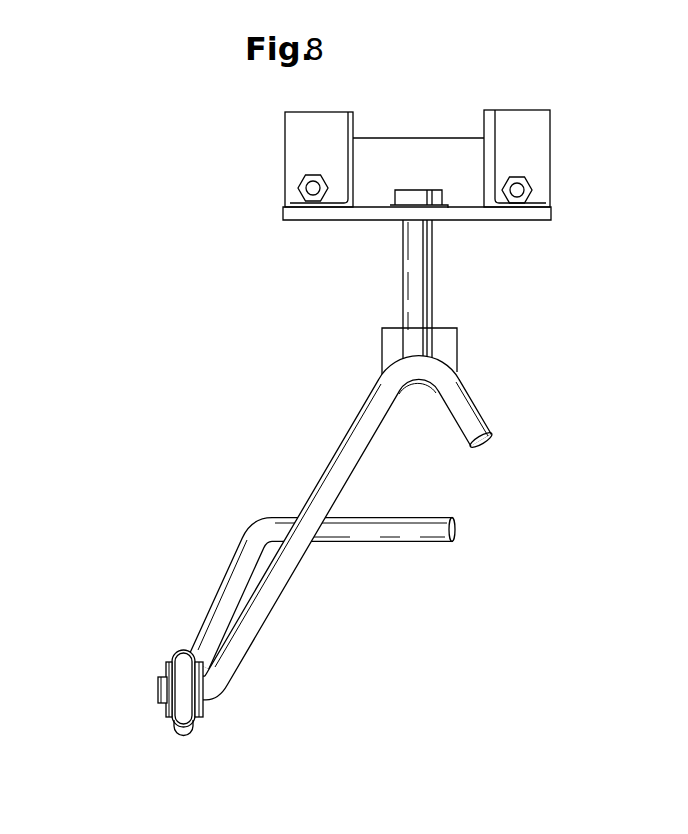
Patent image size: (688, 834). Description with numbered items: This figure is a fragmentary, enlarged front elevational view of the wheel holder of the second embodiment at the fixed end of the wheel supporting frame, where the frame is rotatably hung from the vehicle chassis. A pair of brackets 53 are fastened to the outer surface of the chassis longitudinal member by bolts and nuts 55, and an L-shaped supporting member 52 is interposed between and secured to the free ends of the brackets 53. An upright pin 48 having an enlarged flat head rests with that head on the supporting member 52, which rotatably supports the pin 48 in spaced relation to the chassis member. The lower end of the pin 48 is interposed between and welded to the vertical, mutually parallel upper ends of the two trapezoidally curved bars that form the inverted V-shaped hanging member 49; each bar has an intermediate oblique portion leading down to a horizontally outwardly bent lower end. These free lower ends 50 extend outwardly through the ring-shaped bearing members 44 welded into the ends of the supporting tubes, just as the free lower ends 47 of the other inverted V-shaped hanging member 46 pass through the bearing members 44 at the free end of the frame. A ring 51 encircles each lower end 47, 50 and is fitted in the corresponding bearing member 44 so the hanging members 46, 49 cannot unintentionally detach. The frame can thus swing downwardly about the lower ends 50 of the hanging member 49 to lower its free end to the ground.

The bearing member 44 is at (183, 724).
The hanging member 46 is at (348, 527).
The free lower ends 47 is at (242, 614).
The upright pin 48 is at (405, 282).
The hanging member 49 is at (360, 413).
The free lower ends 50 is at (158, 690).
The ring 51 is at (168, 718).
The L-shaped supporting member 52 is at (382, 148).
The brackets 53 is at (293, 172).
The nuts 55 is at (298, 188).